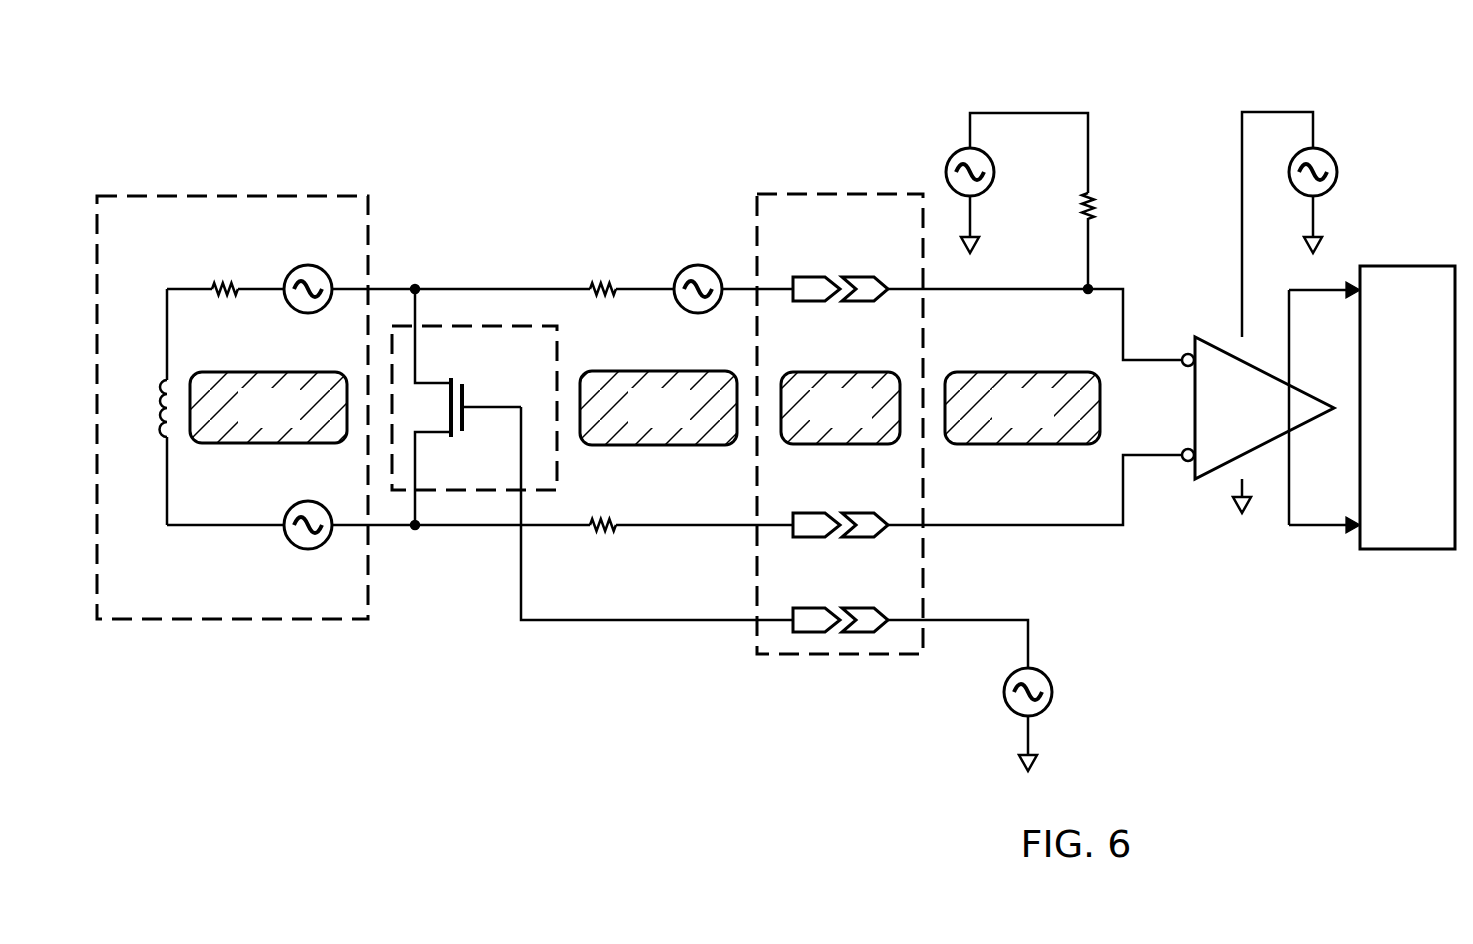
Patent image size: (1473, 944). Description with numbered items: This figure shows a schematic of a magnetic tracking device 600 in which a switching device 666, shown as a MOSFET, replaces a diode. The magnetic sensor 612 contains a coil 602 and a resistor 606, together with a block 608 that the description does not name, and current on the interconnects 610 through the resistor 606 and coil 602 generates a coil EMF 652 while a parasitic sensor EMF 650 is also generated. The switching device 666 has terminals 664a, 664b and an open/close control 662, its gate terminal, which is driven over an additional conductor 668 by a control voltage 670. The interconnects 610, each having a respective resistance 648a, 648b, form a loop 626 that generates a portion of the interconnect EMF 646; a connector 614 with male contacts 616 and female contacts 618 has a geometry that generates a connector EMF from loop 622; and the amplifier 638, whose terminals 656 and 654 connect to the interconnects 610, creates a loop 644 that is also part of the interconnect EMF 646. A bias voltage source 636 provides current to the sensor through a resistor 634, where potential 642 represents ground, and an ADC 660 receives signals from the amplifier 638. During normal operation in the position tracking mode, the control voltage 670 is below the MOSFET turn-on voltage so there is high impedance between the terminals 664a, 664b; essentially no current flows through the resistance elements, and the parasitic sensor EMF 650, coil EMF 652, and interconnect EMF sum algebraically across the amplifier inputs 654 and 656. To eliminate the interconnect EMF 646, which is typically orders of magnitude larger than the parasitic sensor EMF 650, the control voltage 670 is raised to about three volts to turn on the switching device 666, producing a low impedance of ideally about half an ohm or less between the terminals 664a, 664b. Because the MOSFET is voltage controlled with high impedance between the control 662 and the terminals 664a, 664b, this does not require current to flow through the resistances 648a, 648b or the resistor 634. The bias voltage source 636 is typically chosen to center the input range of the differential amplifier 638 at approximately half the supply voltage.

The magnetic tracking device 600 is at (580, 114).
The coil 602 is at (160, 390).
The resistor 606 is at (225, 282).
The sensor model block 608 is at (247, 423).
The interconnects 610 is at (497, 286).
The magnetic sensor 612 is at (187, 191).
The connector 614 is at (855, 193).
The male contacts 616 is at (815, 278).
The female contacts 618 is at (865, 278).
The loop 622 is at (819, 423).
The loop 626 is at (637, 423).
The resistor 634 is at (1096, 206).
The bias voltage source 636 is at (994, 173).
The amplifier 638 is at (1221, 423).
The potential 642 is at (975, 250).
The loop 644 is at (1001, 423).
The interconnect EMF 646 is at (698, 265).
The resistance 648a is at (602, 282).
The resistance 648b is at (602, 532).
The parasitic sensor EMF 650 is at (308, 265).
The coil EMF 652 is at (308, 549).
The amplifier input 654 is at (1185, 460).
The amplifier input 656 is at (1185, 355).
The ADC 660 is at (1386, 443).
The control 662 is at (562, 368).
The terminal 664a is at (418, 378).
The terminal 664b is at (418, 445).
The switching device 666 is at (466, 400).
The additional conductor 668 is at (640, 625).
The control voltage 670 is at (1052, 692).